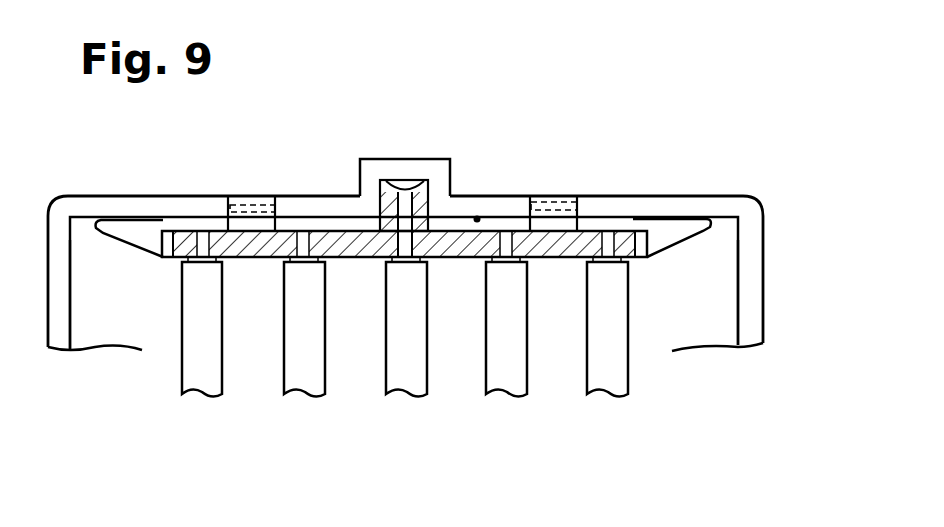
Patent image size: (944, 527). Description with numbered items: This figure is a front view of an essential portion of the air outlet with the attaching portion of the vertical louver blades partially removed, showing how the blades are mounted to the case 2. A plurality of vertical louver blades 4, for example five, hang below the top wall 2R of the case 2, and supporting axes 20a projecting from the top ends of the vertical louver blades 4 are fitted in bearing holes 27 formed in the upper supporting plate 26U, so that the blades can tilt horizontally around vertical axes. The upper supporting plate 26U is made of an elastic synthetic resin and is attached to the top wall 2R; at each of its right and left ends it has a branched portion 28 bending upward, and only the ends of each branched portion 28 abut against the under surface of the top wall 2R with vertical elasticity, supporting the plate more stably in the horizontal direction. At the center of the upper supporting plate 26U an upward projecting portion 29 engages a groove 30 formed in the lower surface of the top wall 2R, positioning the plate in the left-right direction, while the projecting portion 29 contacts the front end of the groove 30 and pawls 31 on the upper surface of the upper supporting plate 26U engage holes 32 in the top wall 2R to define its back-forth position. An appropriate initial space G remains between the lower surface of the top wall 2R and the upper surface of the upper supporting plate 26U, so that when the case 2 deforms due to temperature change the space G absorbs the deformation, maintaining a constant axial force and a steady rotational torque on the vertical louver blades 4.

The case 2 is at (765, 322).
The top wall 2R is at (690, 197).
The vertical louver blades 4 is at (213, 395).
The supporting axes 20a is at (203, 258).
The upper supporting plate 26U is at (617, 240).
The bearing holes 27 is at (302, 263).
The branched portion 28 is at (112, 233).
The projecting portion 29 is at (453, 188).
The groove 30 is at (416, 182).
The pawls 31 is at (258, 200).
The holes 32 is at (270, 203).
The initial space G is at (478, 217).